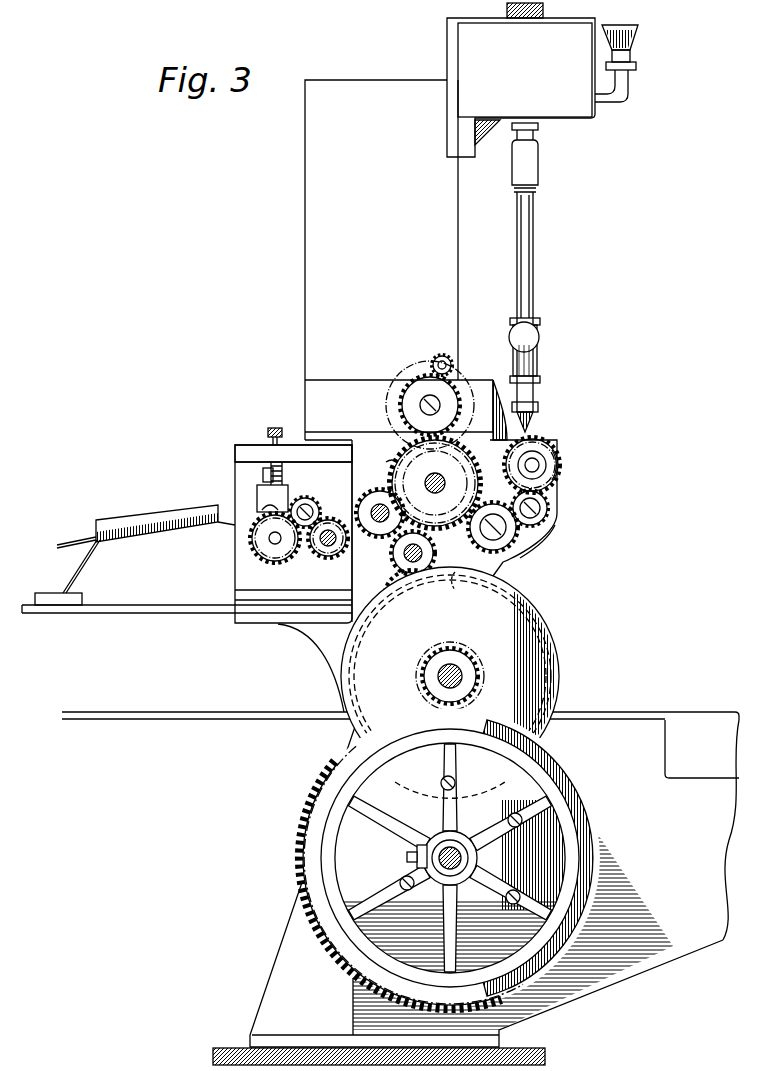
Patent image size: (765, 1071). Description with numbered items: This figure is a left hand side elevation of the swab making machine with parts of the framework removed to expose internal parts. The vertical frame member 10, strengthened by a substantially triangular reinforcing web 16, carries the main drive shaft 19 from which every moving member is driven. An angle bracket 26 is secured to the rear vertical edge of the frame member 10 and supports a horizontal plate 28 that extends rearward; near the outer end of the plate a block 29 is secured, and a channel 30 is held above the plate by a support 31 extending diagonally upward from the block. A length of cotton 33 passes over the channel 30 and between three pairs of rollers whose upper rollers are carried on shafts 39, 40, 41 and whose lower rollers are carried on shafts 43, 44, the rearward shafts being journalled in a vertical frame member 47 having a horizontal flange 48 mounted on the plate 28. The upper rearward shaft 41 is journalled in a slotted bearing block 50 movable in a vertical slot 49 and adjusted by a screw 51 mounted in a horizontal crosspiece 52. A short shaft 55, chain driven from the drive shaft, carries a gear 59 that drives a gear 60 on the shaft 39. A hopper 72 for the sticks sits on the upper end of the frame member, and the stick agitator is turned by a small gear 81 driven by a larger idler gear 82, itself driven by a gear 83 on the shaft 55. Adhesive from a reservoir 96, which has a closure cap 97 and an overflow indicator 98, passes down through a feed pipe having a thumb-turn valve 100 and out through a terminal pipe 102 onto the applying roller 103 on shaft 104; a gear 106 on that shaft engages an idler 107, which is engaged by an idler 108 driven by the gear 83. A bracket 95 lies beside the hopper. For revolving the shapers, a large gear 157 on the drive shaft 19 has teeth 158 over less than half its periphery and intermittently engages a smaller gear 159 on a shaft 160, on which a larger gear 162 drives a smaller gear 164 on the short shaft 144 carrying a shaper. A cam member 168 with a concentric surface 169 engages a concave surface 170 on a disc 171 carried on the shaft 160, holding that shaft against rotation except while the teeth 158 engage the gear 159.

The vertical frame members 10 is at (510, 550).
The reinforcing webs 16 is at (267, 1000).
The main drive shaft 19 is at (462, 852).
The angle bracket 26 is at (325, 624).
The horizontal plate 28 is at (215, 615).
The block 29 is at (50, 593).
The channels 30 is at (155, 510).
The supports 31 is at (88, 567).
The length of cotton 33 is at (75, 543).
The shaft 39 is at (380, 504).
The shaft 40 is at (322, 510).
The shaft 41 is at (268, 508).
The shaft 43 is at (328, 547).
The shaft 44 is at (275, 545).
The vertical frame members 47 is at (235, 558).
The horizontal flanges 48 is at (237, 594).
The vertical slot 49 is at (263, 473).
The slotted bearing block 50 is at (290, 492).
The screw 51 is at (268, 432).
The horizontal crosspiece 52 is at (290, 450).
The short shaft 55 is at (437, 473).
The gear 59 is at (485, 540).
The gear 60 is at (395, 548).
The hopper 72 is at (305, 298).
The small gear 81 is at (440, 357).
The idler gear 82 is at (418, 380).
The gear 83 is at (388, 468).
The bracket 95 is at (498, 395).
The reservoir 96 is at (585, 120).
The closure cap 97 is at (505, 10).
The overflow indicator 98 is at (640, 30).
The thumb-turn valve 100 is at (540, 333).
The terminal pipes 102 is at (530, 420).
The applying roller 103 is at (562, 455).
The shaft 104 is at (535, 460).
The gear 106 is at (565, 462).
The idler 107 is at (552, 505).
The idler 108 is at (548, 530).
The short shaft 144 is at (410, 580).
The large gear 157 is at (340, 768).
The teeth 158 is at (303, 795).
The gear 159 is at (428, 690).
The shaft 160 is at (455, 665).
The gear 162 is at (461, 589).
The gear 164 is at (378, 598).
The cam member 168 is at (461, 858).
The concentric surface 169 is at (527, 778).
The concave surface 170 is at (423, 777).
The disc 171 is at (535, 600).